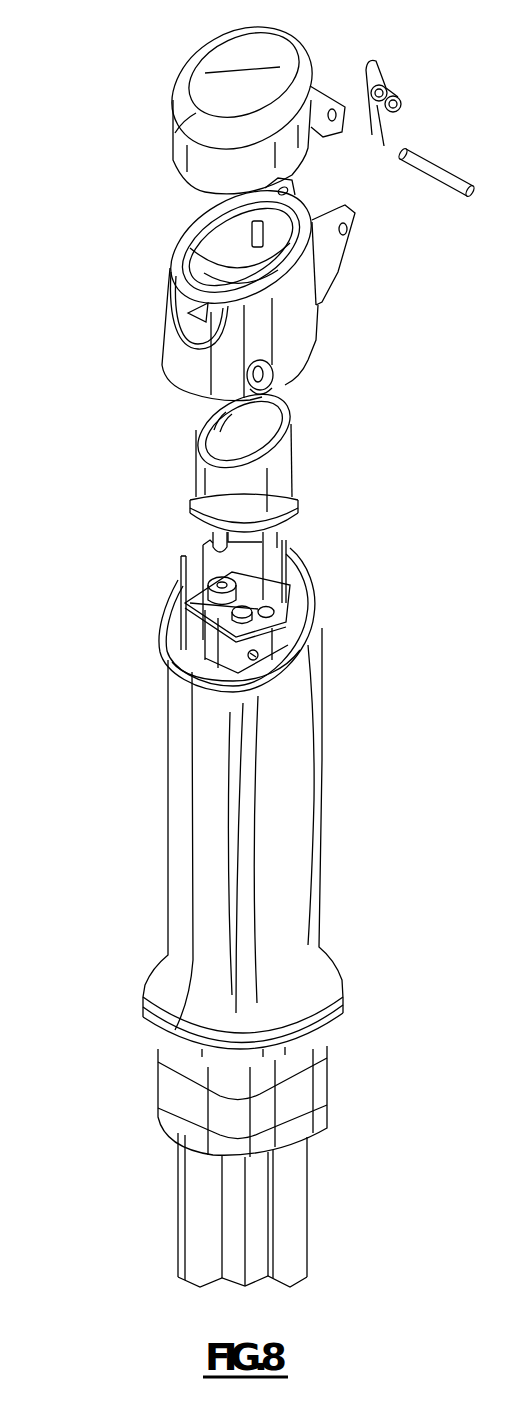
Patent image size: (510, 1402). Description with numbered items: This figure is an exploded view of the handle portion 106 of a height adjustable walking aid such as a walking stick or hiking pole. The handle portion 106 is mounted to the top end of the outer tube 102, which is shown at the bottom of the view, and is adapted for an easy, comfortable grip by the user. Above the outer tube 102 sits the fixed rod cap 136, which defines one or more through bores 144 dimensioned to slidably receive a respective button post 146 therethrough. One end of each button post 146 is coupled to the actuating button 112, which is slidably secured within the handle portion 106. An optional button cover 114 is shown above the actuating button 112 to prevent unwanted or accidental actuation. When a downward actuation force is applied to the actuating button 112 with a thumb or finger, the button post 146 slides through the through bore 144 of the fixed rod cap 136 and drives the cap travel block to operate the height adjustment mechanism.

The handle portion 106 is at (100, 258).
The button cover 114 is at (303, 77).
The actuating button 112 is at (285, 455).
The button post 146 is at (213, 533).
The through bores 144 is at (222, 586).
The fixed rod cap 136 is at (190, 603).
The outer tube 102 is at (295, 1197).